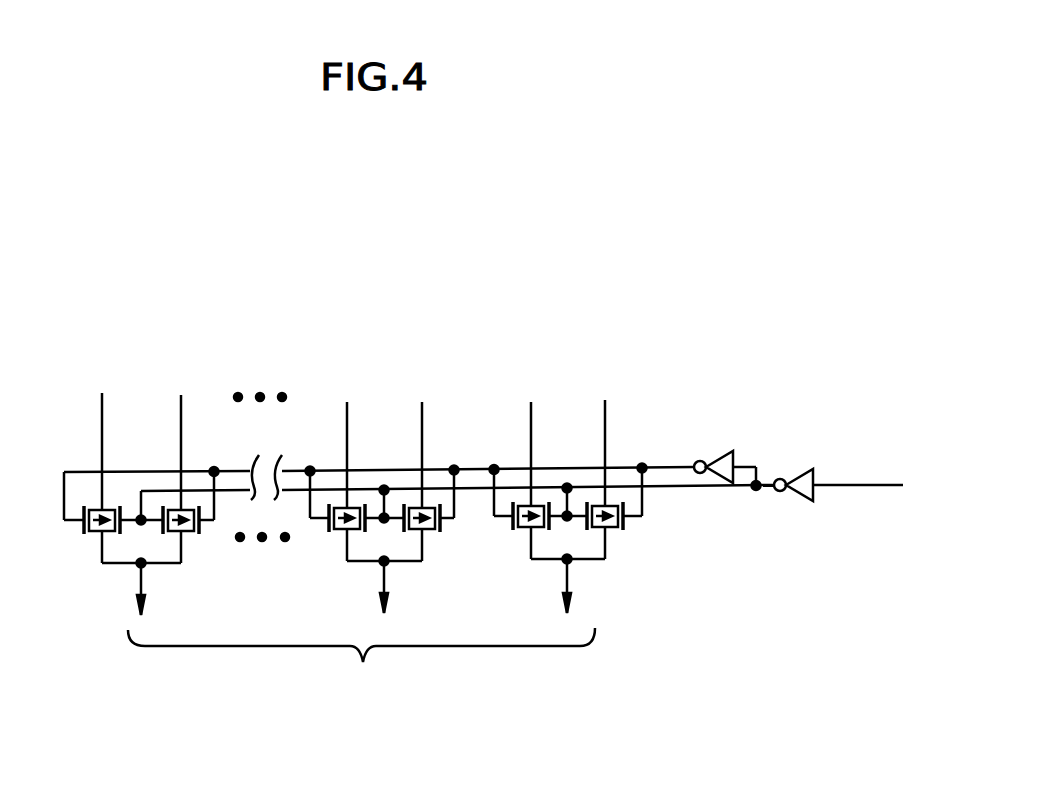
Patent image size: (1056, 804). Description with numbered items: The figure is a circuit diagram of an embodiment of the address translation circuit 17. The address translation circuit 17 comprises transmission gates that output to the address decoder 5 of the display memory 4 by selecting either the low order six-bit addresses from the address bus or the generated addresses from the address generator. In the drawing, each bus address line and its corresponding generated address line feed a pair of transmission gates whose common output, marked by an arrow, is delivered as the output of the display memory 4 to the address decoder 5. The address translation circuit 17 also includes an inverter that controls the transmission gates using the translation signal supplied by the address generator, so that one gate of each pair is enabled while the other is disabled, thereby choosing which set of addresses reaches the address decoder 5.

The address translation circuit 17 is at (468, 244).
The display memory 4 is at (383, 685).
The address decoder 5 is at (417, 728).